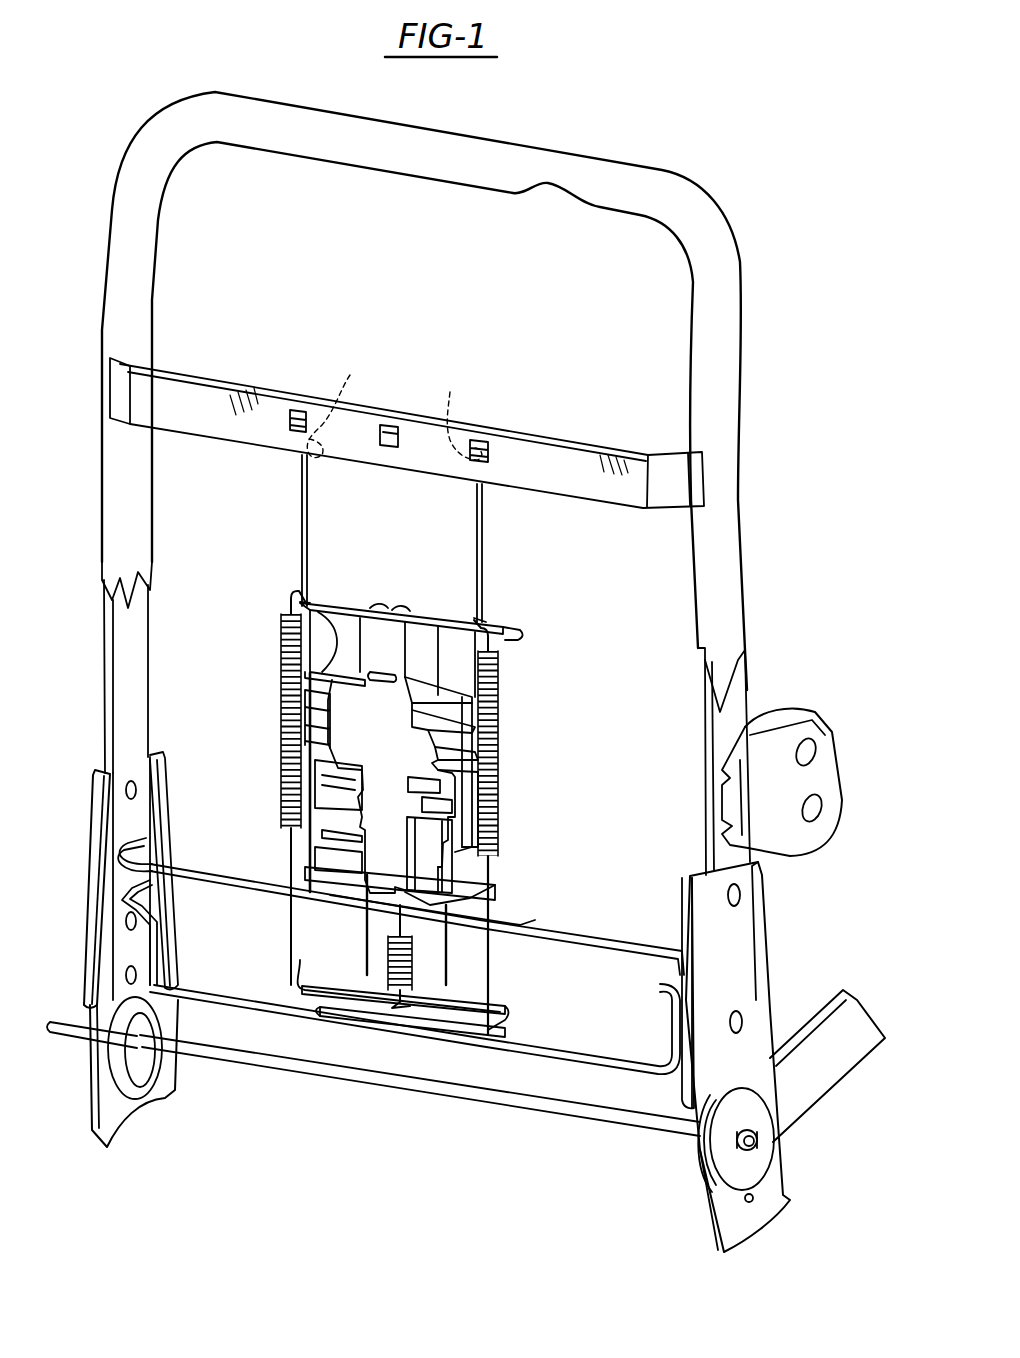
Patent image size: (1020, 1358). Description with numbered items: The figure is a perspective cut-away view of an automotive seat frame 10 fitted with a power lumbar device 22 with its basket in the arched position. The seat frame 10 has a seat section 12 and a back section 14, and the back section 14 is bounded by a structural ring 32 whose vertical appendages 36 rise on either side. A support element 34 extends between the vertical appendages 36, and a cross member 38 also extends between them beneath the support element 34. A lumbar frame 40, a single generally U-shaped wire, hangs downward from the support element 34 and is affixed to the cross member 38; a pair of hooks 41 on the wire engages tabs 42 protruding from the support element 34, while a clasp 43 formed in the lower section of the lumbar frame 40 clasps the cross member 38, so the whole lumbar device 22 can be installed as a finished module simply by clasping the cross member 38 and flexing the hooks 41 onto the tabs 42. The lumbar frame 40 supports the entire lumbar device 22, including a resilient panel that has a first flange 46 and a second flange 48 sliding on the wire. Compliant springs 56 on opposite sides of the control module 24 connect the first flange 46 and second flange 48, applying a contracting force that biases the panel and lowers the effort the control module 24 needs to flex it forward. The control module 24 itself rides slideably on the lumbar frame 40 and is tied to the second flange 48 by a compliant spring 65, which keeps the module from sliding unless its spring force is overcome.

The automotive seat frame 10 is at (758, 124).
The seat section 12 is at (822, 1094).
The back section 14 is at (770, 538).
The power lumbar device 22 is at (566, 644).
The control module 24 is at (370, 790).
The structural ring 32 is at (748, 284).
The support element 34 is at (232, 378).
The vertical appendages 36 is at (108, 210).
The cross member 38 is at (568, 1062).
The lumbar frame 40 is at (302, 519).
The hooks 41 is at (393, 404).
The tabs 42 is at (300, 410).
The clasp 43 is at (365, 1032).
The first flange 46 is at (340, 602).
The second flange 48 is at (462, 1034).
The compliant springs 56 is at (504, 744).
The compliant spring 65 is at (476, 937).